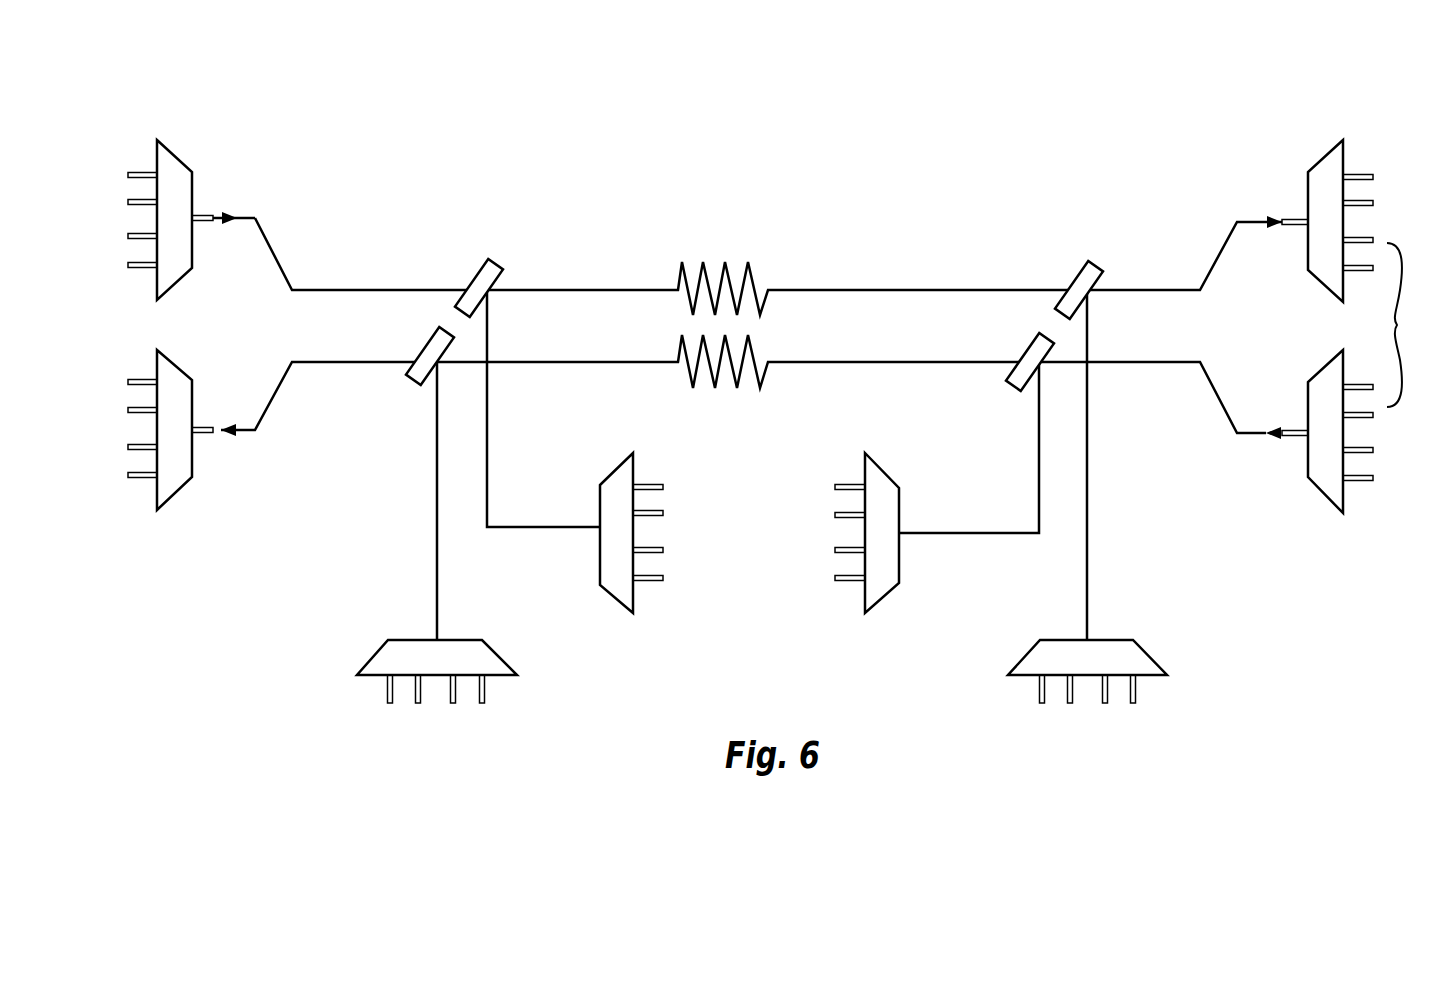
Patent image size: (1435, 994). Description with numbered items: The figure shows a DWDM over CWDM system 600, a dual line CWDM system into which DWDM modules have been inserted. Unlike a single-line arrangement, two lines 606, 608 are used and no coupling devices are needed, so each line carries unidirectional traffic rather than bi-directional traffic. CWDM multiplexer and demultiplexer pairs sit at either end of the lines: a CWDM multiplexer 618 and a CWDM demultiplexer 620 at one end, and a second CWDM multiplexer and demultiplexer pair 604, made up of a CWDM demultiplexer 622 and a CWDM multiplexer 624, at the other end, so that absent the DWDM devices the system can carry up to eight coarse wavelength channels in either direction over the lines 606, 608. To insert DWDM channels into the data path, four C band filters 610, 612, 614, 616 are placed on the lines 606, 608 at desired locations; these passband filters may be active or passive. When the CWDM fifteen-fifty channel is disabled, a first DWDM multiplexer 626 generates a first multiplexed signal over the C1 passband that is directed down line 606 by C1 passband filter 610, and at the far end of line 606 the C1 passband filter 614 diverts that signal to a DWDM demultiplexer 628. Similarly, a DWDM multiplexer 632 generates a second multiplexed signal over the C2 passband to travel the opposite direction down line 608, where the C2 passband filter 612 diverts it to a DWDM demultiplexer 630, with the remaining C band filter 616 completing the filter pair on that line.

The DWDM over CWDM system 600 is at (862, 182).
The second CWDM multiplexer and demultiplexer pair 604 is at (1411, 325).
The line 606 is at (905, 290).
The line 608 is at (893, 364).
The C band filter 610 is at (475, 272).
The C band filter 612 is at (412, 372).
The C band filter 614 is at (1078, 272).
The C band filter 616 is at (1016, 333).
The CWDM multiplexer 618 is at (180, 164).
The CWDM demultiplexer 620 is at (180, 490).
The CWDM demultiplexer 622 is at (1316, 166).
The CWDM multiplexer 624 is at (1318, 493).
The first DWDM multiplexer 626 is at (608, 592).
The DWDM demultiplexer 628 is at (1145, 652).
The DWDM demultiplexer 630 is at (378, 648).
The DWDM multiplexer 632 is at (890, 592).